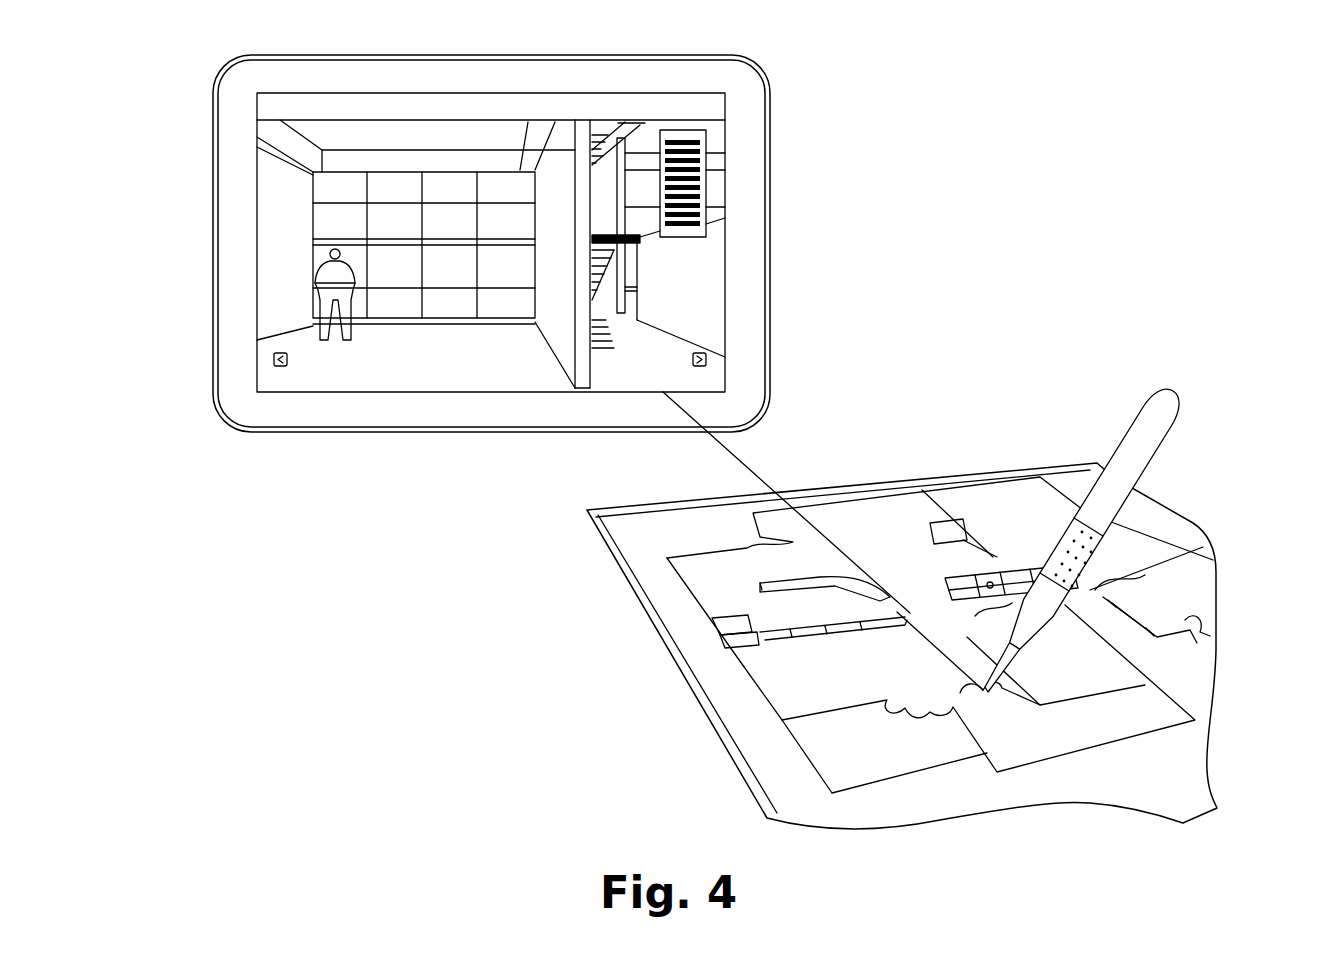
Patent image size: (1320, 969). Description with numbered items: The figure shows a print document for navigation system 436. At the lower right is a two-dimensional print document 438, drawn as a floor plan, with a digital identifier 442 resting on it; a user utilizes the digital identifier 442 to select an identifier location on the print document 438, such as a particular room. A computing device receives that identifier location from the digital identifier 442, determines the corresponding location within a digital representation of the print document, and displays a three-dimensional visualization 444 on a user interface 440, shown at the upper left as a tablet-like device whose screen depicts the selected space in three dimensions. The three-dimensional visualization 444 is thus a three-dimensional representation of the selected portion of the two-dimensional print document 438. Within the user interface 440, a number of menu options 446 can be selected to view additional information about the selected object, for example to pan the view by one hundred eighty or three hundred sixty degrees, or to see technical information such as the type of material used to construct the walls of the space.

The print document for navigation system 436 is at (134, 72).
The print document 438 is at (1210, 655).
The user interface 440 is at (752, 108).
The digital identifier 442 is at (1157, 435).
The 3D visualization 444 is at (275, 203).
The menu options 446 is at (705, 172).